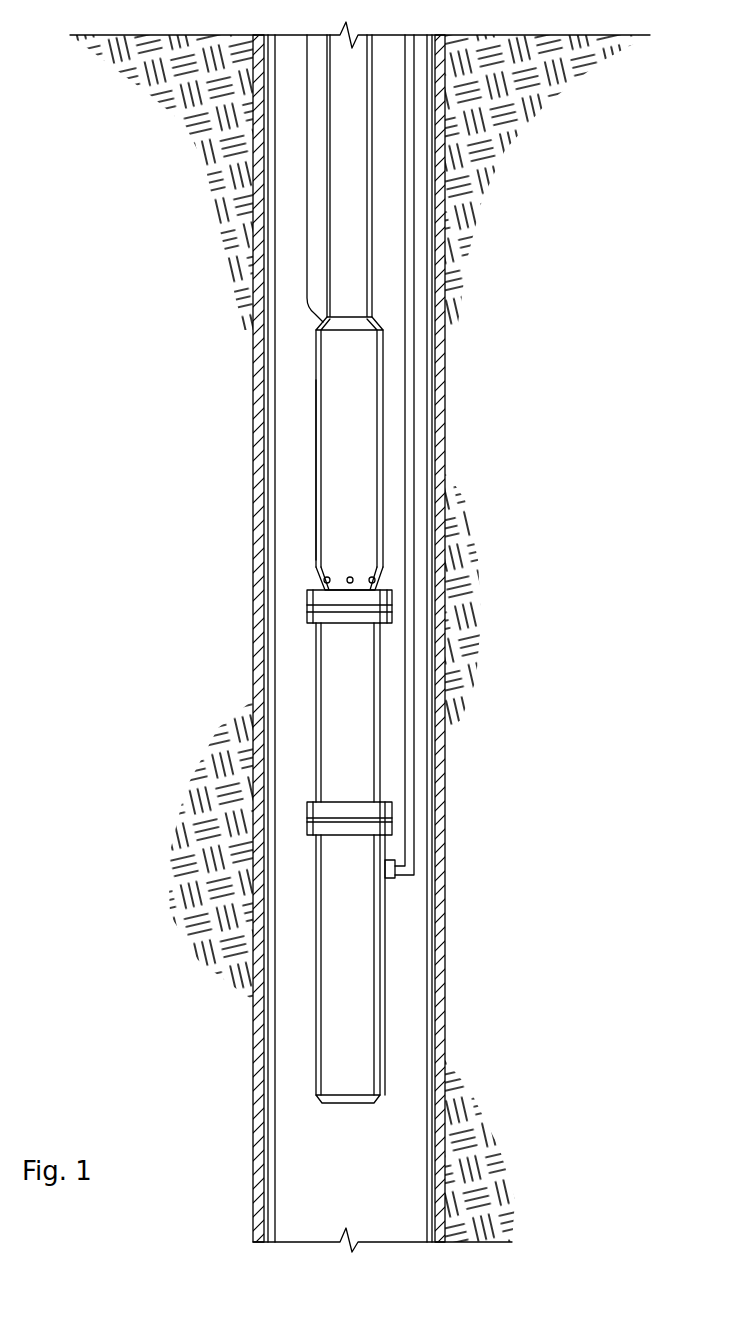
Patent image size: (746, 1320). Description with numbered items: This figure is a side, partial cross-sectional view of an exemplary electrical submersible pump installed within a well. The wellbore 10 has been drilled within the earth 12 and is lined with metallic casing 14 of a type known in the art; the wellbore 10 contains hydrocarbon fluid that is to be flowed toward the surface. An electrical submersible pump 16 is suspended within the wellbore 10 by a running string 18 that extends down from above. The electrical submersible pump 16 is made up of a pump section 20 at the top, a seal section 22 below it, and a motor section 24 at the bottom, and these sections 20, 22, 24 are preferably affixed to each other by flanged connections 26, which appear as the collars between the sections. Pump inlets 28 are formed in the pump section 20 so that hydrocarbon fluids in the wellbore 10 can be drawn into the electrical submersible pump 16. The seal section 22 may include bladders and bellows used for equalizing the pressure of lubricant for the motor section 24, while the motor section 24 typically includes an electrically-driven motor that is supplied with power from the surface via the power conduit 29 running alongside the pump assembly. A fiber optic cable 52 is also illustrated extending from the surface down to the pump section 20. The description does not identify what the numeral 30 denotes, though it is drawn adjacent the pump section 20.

The wellbore 10 is at (454, 323).
The earth 12 is at (237, 908).
The metallic casing 14 is at (253, 440).
The electrical submersible pump 16 is at (400, 668).
The running string 18 is at (325, 237).
The pump section 20 is at (384, 447).
The seal section 22 is at (316, 690).
The motor section 24 is at (316, 978).
The flanged connections 26 is at (392, 612).
The pump inlets 28 is at (372, 576).
The power conduit 29 is at (412, 372).
The pump housing 30 is at (316, 487).
The fiber optic cable 52 is at (307, 150).